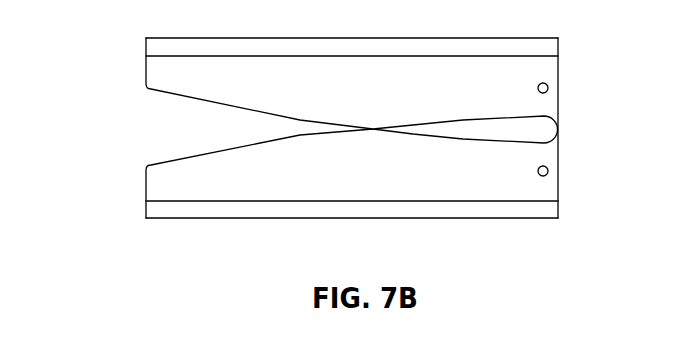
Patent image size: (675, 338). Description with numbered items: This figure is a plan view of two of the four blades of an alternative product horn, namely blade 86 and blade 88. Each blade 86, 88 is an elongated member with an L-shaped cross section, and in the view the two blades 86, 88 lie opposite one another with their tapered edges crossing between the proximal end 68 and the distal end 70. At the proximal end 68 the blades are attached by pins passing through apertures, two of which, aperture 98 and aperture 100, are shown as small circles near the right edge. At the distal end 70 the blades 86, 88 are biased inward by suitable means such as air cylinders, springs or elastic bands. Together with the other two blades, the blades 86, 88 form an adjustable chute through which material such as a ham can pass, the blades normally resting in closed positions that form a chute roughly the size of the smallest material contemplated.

The proximal end 68 is at (543, 72).
The distal end 70 is at (130, 60).
The blade 86 is at (357, 47).
The blade 88 is at (356, 210).
The aperture 98 is at (548, 90).
The aperture 100 is at (548, 168).